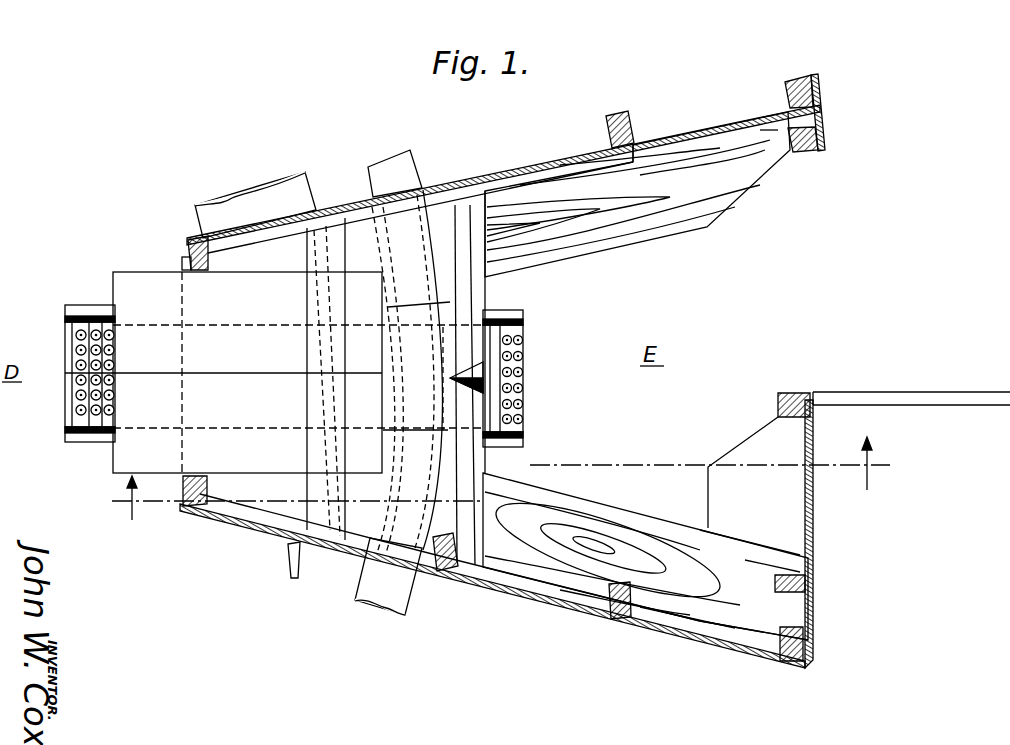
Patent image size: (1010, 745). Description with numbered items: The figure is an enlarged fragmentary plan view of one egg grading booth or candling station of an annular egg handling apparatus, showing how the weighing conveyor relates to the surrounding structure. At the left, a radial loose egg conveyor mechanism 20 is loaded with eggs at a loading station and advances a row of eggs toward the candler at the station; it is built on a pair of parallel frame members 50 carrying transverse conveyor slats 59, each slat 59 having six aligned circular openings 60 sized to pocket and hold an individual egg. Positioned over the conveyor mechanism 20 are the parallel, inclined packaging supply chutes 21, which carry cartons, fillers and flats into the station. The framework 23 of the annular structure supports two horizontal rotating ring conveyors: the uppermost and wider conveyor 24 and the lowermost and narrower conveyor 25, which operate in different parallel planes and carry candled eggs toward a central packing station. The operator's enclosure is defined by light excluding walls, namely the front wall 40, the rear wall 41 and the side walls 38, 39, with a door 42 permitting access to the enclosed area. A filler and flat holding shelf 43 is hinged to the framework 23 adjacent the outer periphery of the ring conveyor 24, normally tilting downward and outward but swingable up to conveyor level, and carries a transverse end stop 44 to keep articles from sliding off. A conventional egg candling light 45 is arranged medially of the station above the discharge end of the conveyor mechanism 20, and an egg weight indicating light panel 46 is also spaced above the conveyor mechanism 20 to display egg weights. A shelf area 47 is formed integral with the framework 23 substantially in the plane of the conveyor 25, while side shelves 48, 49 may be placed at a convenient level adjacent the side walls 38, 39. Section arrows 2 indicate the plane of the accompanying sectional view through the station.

The section line 2- 2 is at (496, 494).
The loose egg conveyor mechanism 20 is at (290, 370).
The packaging supply chute 21 is at (153, 272).
The framework 23 is at (352, 580).
The upper ring conveyor 24 is at (250, 200).
The lower ring conveyor 25 is at (385, 165).
The side wall 38 is at (522, 596).
The side wall 39 is at (528, 162).
The front wall 40 is at (185, 512).
The rear wall 41 is at (812, 540).
The door 42 is at (977, 406).
The filler and flat holding shelf 43 is at (432, 382).
The end stop 44 is at (446, 408).
The egg candling light 45 is at (528, 363).
The light panel 46 is at (524, 319).
The shelf area 47 is at (508, 332).
The side shelf 48 is at (600, 515).
The side shelf 49 is at (665, 235).
The frame member 50 is at (95, 305).
The conveyor slat 59 is at (65, 425).
The egg holding opening 60 is at (65, 390).